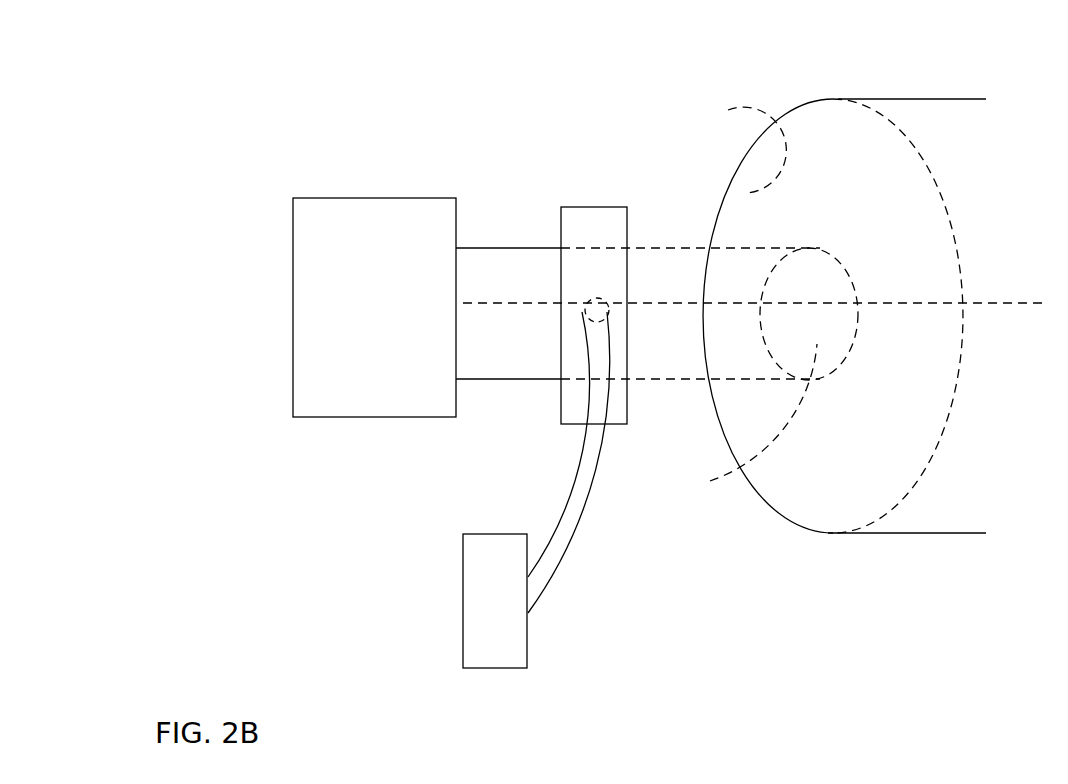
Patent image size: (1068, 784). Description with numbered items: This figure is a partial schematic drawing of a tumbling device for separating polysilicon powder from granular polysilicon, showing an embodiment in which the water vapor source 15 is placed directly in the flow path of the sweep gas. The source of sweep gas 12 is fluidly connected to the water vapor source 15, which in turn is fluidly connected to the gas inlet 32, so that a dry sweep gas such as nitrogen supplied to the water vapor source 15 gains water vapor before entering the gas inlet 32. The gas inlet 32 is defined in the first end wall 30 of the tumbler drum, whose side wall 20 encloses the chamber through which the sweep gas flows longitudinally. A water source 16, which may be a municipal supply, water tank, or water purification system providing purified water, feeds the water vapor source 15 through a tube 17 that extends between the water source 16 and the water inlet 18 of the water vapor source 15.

The source of sweep gas 12 is at (413, 197).
The water vapor source 15 is at (613, 205).
The water source 16 is at (463, 607).
The tube 17 is at (567, 498).
The water inlet 18 is at (620, 318).
The side wall 20 is at (885, 98).
The first end wall 30 is at (730, 148).
The gas inlet 32 is at (740, 438).